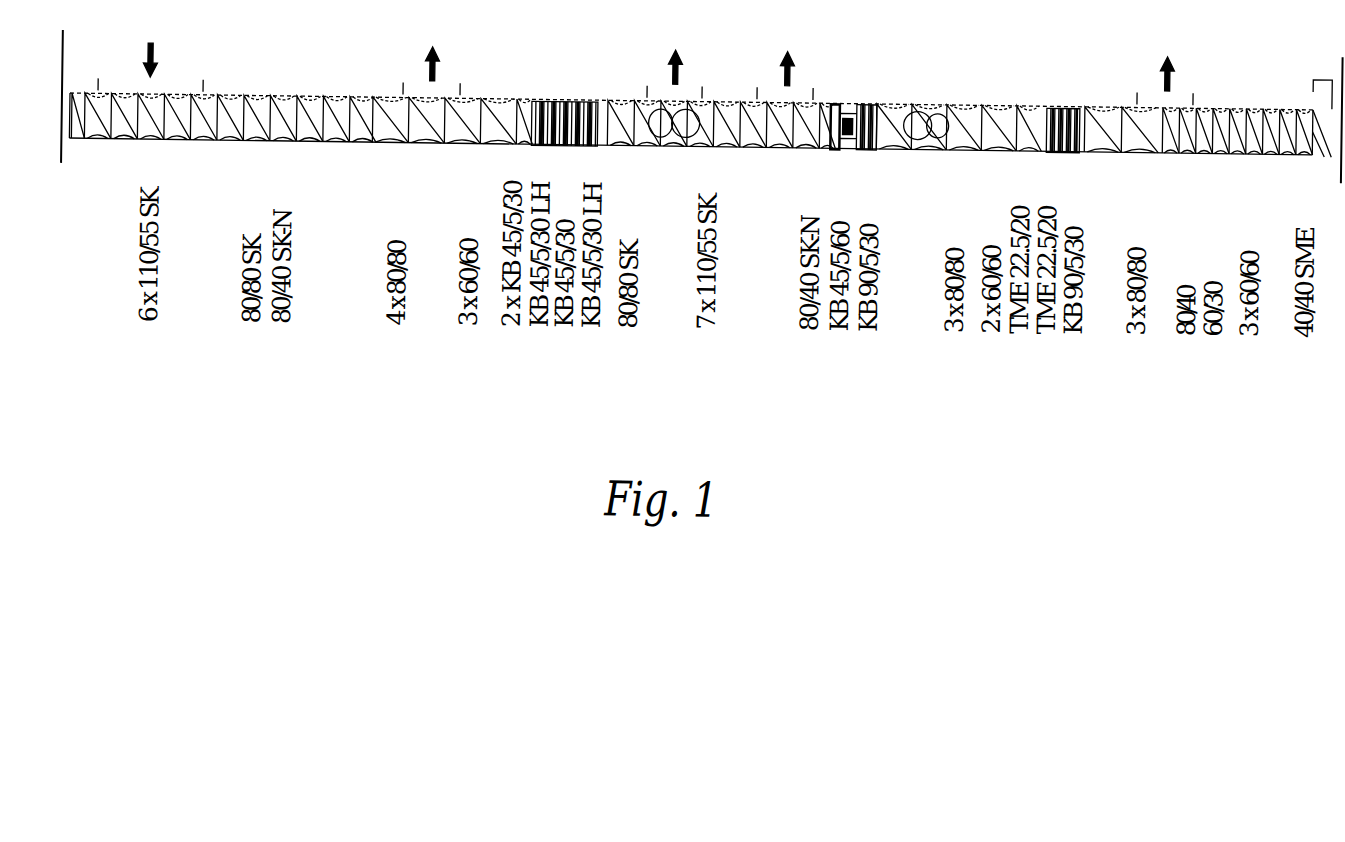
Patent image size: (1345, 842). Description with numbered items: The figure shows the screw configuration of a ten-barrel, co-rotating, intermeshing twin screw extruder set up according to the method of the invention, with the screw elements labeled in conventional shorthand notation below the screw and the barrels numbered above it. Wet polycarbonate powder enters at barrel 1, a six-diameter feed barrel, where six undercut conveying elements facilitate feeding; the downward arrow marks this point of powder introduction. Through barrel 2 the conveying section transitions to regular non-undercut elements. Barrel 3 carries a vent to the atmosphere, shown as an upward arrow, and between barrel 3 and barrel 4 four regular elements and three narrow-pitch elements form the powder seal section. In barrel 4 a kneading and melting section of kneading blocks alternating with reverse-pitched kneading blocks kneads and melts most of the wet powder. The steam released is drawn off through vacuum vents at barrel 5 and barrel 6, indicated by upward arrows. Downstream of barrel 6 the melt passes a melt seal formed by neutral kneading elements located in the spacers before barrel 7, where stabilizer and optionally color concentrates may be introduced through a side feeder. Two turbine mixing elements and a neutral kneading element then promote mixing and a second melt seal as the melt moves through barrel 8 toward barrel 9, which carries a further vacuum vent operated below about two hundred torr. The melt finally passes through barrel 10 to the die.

The barrel 1 is at (72, 75).
The barrel 2 is at (225, 75).
The barrel 3 is at (355, 75).
The barrel 4 is at (467, 75).
The barrel 5 is at (597, 75).
The barrel 6 is at (708, 75).
The barrel 7 is at (820, 75).
The barrel 8 is at (970, 75).
The barrel 9 is at (1087, 75).
The barrel 10 is at (1200, 75).